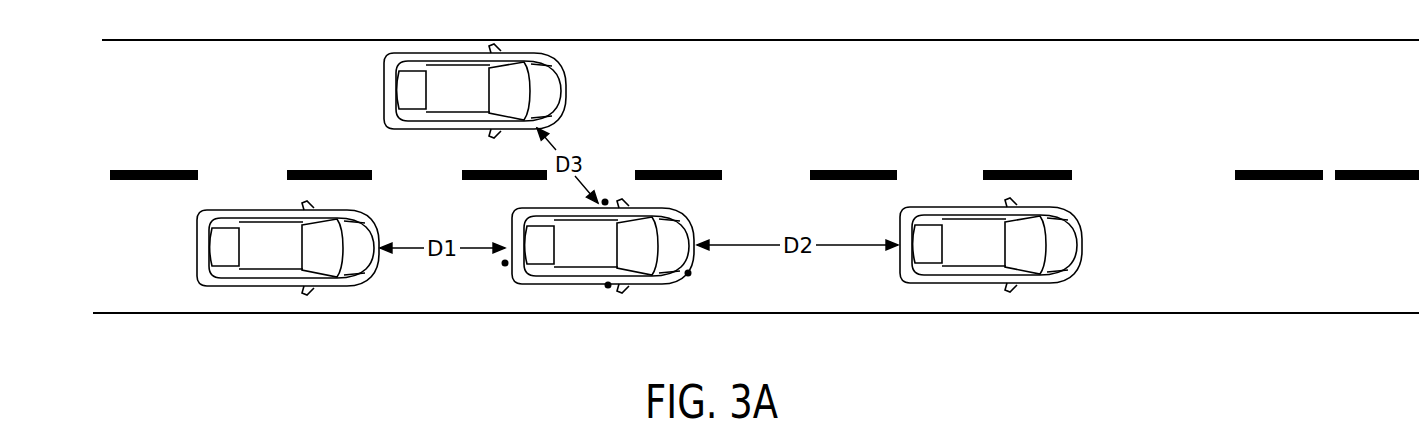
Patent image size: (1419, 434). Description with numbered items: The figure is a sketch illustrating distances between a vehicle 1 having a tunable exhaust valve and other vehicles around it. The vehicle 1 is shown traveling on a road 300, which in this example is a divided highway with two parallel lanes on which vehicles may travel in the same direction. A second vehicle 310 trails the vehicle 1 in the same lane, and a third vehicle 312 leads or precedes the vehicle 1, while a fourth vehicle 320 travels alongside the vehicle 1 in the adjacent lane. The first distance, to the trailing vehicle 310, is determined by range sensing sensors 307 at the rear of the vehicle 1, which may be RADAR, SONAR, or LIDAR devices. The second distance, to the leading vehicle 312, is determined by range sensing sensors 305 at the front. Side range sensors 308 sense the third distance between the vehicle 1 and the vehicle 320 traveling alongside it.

The road 300 is at (195, 88).
The vehicle 1 is at (575, 284).
The range sensing sensors 305 is at (689, 277).
The range sensing sensors 307 is at (505, 267).
The side range sensors 308 is at (607, 201).
The second vehicle 310 is at (237, 283).
The third vehicle 312 is at (920, 277).
The fourth vehicle 320 is at (568, 90).